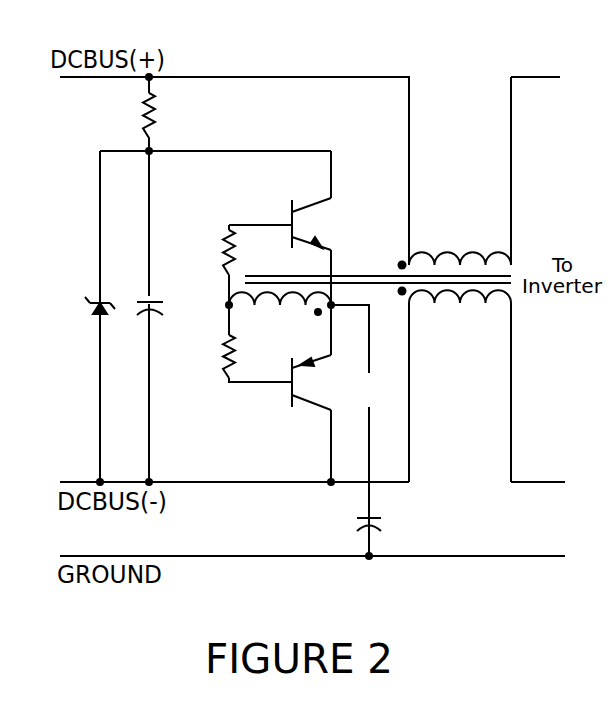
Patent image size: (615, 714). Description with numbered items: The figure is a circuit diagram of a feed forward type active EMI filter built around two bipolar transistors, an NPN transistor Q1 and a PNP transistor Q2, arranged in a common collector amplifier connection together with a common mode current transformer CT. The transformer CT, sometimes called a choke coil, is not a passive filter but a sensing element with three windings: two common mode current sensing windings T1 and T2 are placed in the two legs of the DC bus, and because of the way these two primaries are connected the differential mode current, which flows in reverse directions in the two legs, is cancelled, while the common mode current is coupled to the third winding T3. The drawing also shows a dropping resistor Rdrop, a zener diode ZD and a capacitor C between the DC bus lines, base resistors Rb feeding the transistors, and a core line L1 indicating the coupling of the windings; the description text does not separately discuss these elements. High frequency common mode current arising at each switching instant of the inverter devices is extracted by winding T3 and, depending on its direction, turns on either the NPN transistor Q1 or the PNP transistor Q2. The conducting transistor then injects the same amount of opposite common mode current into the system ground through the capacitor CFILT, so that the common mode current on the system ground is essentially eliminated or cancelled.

The dropping resistor Rdrop is at (120, 114).
The zener diode ZD is at (85, 294).
The capacitor C is at (154, 294).
The base resistors Rb is at (245, 304).
The NPN bipolar transistor Q1 is at (316, 224).
The PNP bipolar transistor Q2 is at (316, 382).
The third winding T3 is at (280, 311).
The inductor / transformer core L1 is at (378, 269).
The common mode current transformer CT is at (469, 227).
The common mode current sensing winding T1 is at (460, 246).
The common mode current sensing winding T2 is at (460, 310).
The capacitor CFILT is at (399, 525).